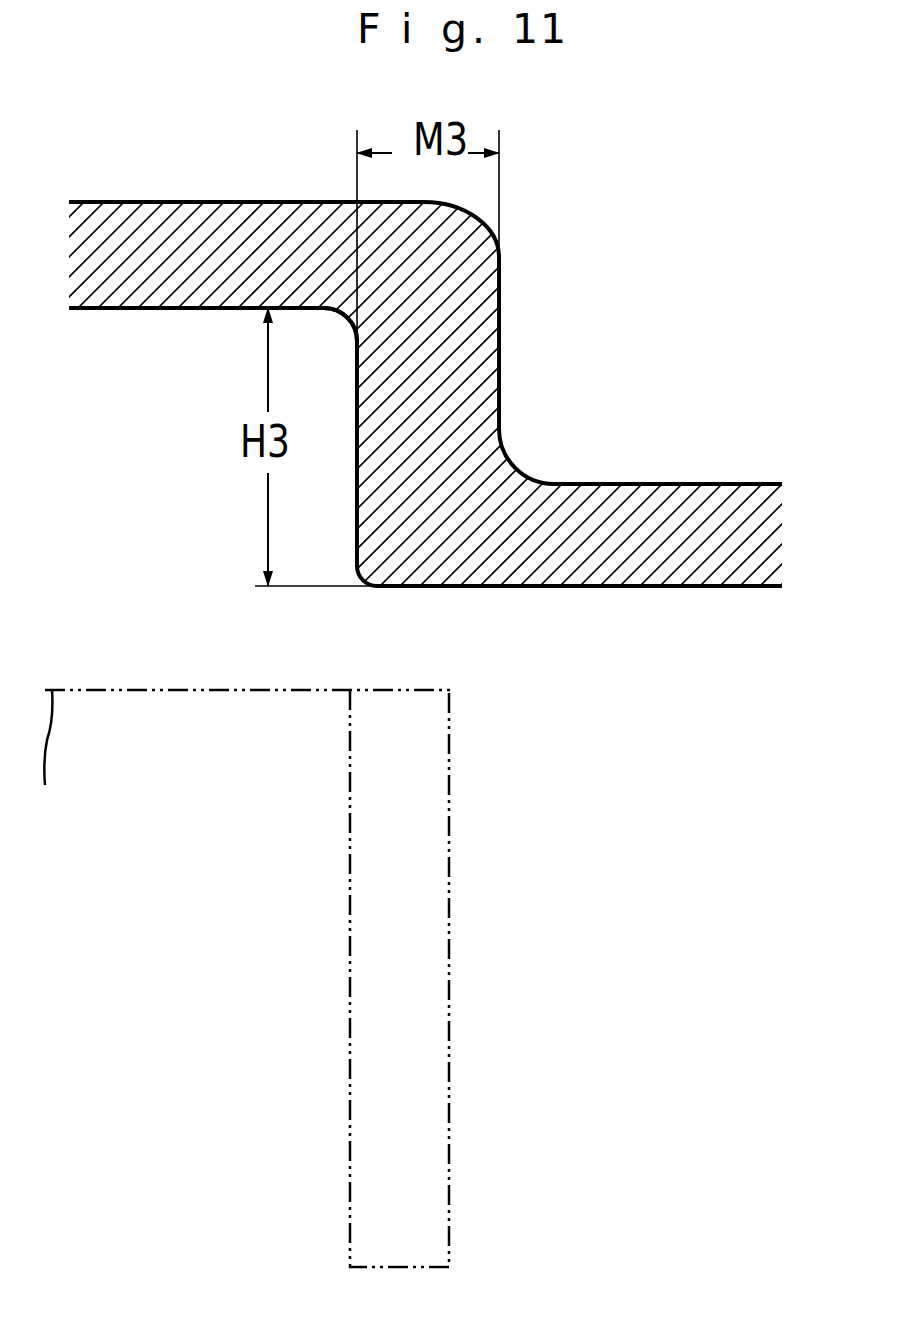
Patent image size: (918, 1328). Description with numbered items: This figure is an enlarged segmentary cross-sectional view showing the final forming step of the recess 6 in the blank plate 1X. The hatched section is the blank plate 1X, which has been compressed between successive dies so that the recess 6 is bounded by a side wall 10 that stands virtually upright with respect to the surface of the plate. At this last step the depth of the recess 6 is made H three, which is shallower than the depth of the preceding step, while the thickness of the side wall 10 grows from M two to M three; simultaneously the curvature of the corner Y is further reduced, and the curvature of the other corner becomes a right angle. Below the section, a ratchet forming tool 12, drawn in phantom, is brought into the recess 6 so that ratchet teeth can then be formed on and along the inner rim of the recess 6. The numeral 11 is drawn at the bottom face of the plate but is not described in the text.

The recess 6 is at (167, 212).
The side wall 10 is at (475, 350).
The blank plate 1X is at (723, 494).
The lower flange portion 11 is at (621, 588).
The corner Y is at (340, 323).
The ratchet forming tool 12 is at (450, 1003).